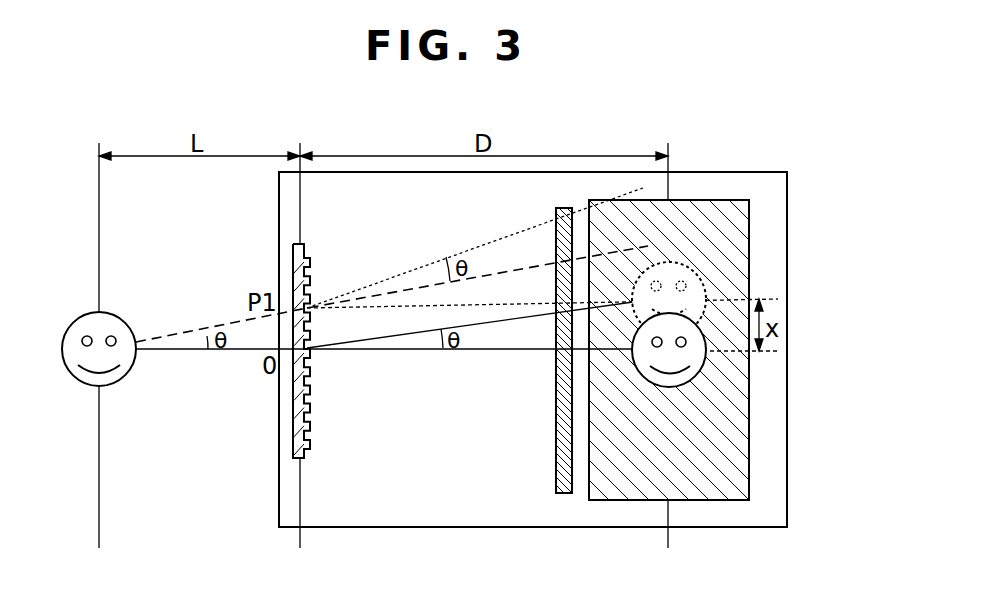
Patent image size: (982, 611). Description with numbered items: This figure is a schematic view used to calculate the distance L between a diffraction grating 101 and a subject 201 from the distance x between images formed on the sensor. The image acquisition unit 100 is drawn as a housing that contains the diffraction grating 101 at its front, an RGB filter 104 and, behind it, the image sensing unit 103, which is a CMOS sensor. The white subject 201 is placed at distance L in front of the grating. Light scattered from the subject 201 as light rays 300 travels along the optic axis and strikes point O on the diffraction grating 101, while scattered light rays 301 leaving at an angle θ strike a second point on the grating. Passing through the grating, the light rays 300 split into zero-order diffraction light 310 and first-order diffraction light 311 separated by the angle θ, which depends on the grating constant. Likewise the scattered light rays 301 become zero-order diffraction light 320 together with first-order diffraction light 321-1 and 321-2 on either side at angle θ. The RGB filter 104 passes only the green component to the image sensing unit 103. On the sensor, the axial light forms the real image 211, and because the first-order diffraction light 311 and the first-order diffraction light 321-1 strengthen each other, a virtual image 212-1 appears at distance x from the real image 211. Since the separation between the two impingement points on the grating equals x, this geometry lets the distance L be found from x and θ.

The image acquisition unit 100 is at (277, 190).
The diffraction grating 101 is at (303, 244).
The image sensing unit 103 is at (702, 200).
The RGB filter 104 is at (556, 208).
The subject 201 is at (125, 325).
The real image 211 is at (703, 366).
The virtual image 212-1 is at (702, 258).
The light rays 300 is at (235, 349).
The scattered light rays 301 is at (232, 325).
The zero-order diffraction light 310 is at (483, 349).
The first-order diffraction light 311 is at (530, 317).
The zero-order diffraction light 320 is at (493, 247).
The first-order diffraction light 321-1 is at (397, 275).
The first-order diffraction light 321-2 is at (388, 307).